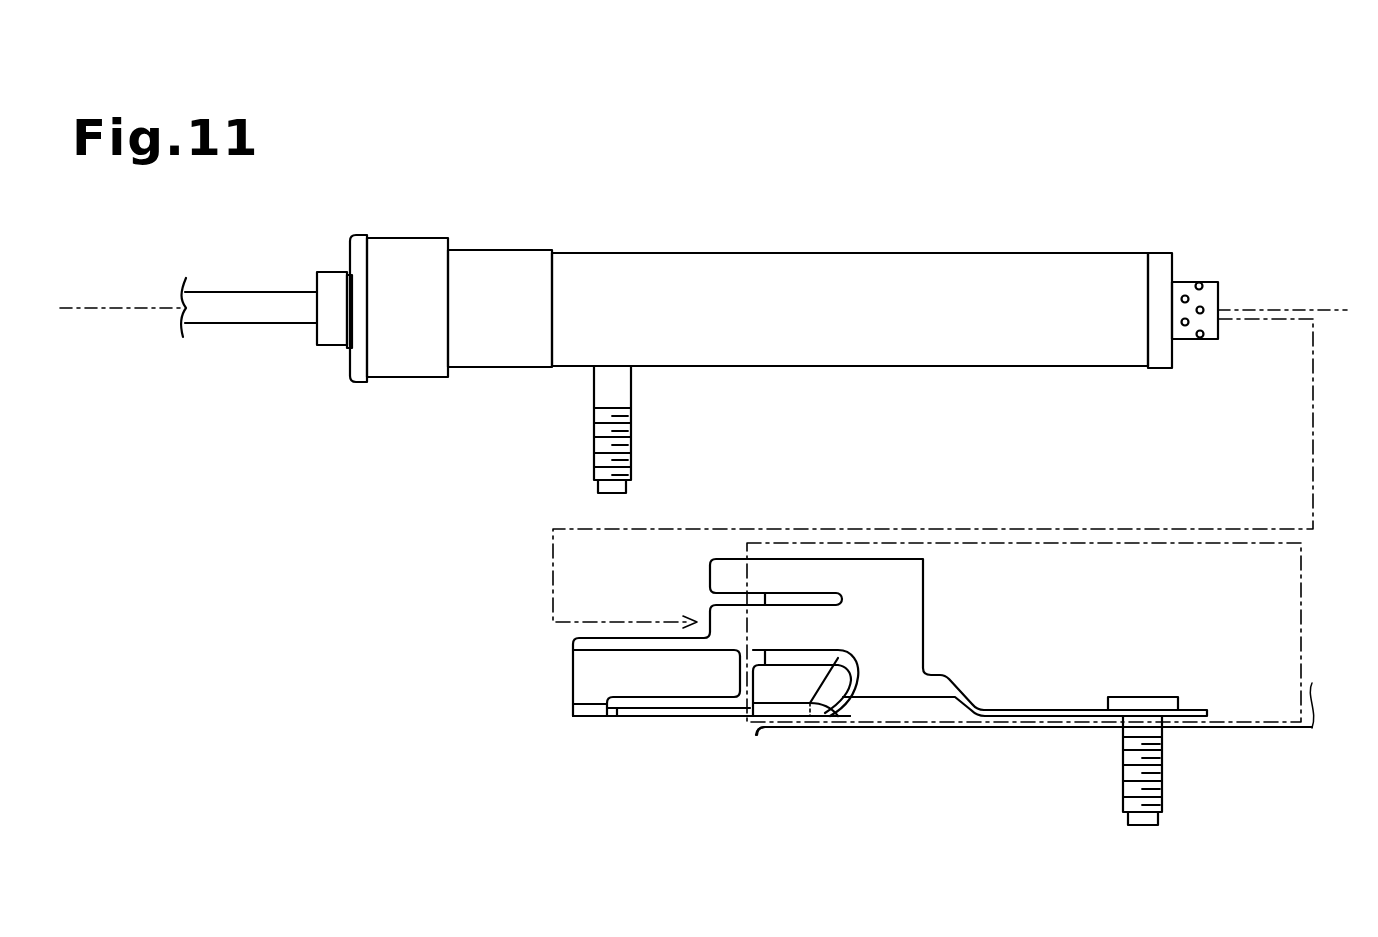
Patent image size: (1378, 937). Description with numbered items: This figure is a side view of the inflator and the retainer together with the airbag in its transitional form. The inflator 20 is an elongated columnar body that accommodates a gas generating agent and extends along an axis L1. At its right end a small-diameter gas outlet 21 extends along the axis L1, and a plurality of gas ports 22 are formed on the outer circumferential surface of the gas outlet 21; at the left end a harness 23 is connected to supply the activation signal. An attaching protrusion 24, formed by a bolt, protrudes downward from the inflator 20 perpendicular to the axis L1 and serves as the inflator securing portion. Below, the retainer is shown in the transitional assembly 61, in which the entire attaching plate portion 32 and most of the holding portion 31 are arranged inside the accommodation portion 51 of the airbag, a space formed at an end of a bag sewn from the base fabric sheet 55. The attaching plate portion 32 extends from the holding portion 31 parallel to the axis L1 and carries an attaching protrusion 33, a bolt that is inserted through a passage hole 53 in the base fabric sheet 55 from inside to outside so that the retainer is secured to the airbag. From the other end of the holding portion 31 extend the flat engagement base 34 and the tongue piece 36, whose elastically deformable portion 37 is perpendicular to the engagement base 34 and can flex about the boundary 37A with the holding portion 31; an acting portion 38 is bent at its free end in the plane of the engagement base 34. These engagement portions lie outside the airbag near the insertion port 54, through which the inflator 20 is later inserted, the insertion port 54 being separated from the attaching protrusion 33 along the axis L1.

The inflator 20 is at (1008, 265).
The gas outlet 21 is at (1207, 288).
The gas ports 22 is at (1200, 336).
The harness 23 is at (245, 315).
The attaching protrusion 24 is at (619, 394).
The holding portion 31 is at (923, 575).
The attaching plate portion 32 is at (1035, 710).
The attaching protrusion 33 is at (1165, 792).
The engagement base 34 is at (690, 717).
The tongue piece 36 is at (650, 760).
The elastically deformable portion 37 is at (628, 688).
The boundary 37A is at (830, 624).
The acting portion 38 is at (583, 717).
The accommodation portion 51 is at (1301, 612).
The passage hole 53 is at (1118, 728).
The insertion port 54 is at (756, 734).
The base fabric sheet 55 is at (1302, 730).
The transitional assembly 61 is at (918, 766).
The axis L1 is at (1328, 311).